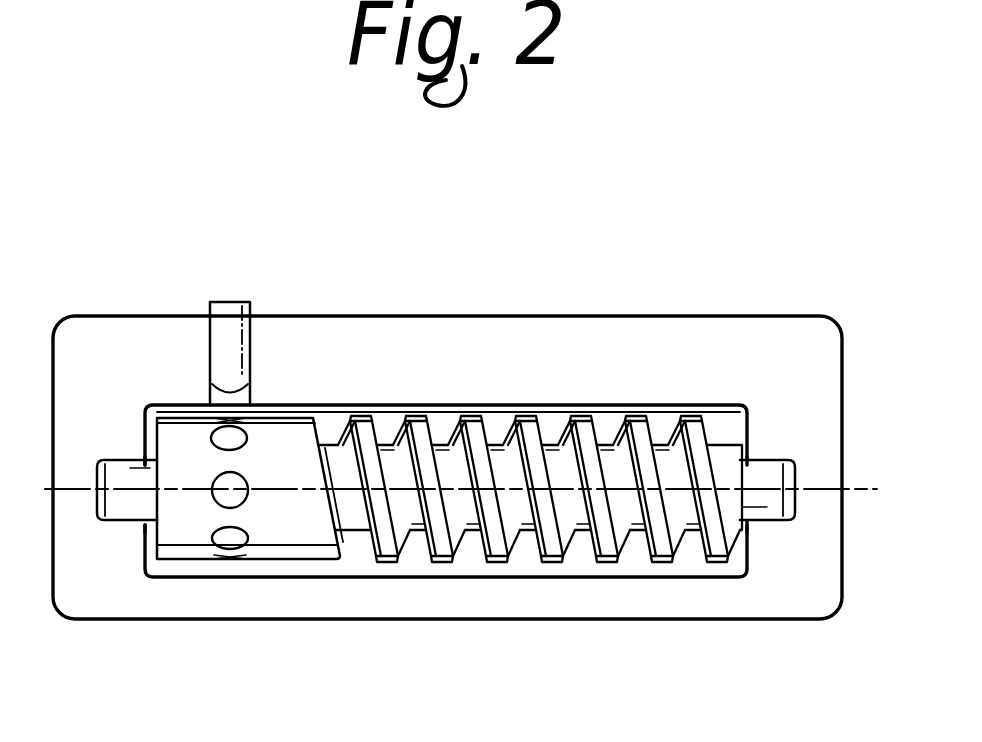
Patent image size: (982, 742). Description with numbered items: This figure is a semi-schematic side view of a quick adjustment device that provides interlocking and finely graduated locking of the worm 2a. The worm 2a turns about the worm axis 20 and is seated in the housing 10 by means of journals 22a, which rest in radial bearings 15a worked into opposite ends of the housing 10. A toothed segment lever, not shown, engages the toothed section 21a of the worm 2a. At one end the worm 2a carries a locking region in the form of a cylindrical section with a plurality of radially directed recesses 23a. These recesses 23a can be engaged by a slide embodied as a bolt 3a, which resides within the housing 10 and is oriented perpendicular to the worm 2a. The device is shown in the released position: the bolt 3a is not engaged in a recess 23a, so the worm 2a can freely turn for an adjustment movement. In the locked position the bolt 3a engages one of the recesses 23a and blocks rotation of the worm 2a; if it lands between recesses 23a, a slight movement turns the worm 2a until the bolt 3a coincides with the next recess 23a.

The worm 2a is at (530, 371).
The bolt 3a is at (230, 325).
The housing 10 is at (537, 365).
The radial bearings 15a is at (117, 433).
The worm axis 20 is at (858, 489).
The toothed section 21a is at (364, 400).
The journals 22a is at (128, 507).
The recesses 23a is at (241, 497).